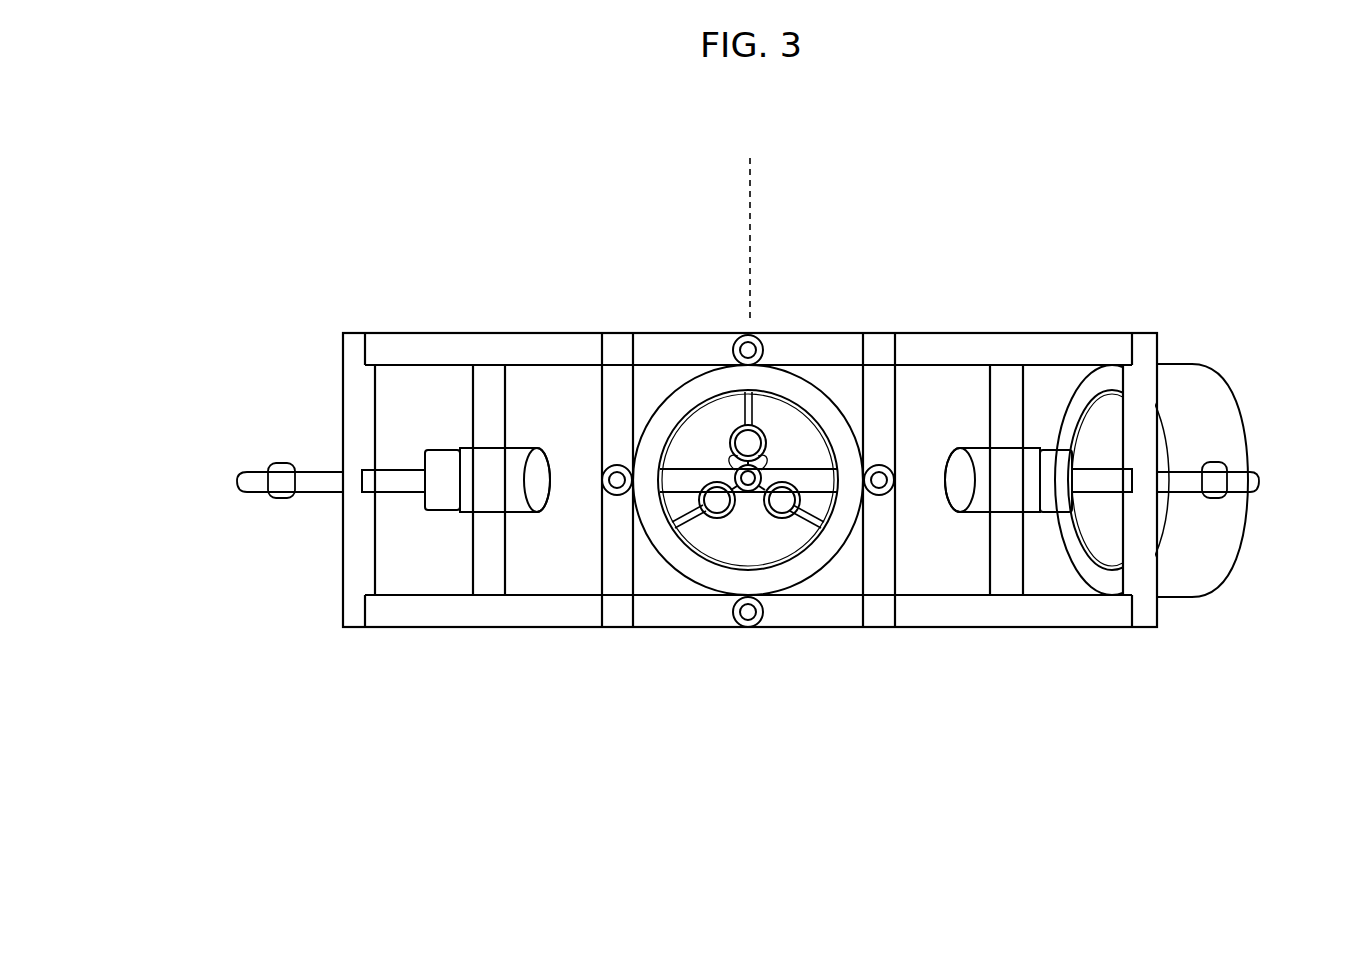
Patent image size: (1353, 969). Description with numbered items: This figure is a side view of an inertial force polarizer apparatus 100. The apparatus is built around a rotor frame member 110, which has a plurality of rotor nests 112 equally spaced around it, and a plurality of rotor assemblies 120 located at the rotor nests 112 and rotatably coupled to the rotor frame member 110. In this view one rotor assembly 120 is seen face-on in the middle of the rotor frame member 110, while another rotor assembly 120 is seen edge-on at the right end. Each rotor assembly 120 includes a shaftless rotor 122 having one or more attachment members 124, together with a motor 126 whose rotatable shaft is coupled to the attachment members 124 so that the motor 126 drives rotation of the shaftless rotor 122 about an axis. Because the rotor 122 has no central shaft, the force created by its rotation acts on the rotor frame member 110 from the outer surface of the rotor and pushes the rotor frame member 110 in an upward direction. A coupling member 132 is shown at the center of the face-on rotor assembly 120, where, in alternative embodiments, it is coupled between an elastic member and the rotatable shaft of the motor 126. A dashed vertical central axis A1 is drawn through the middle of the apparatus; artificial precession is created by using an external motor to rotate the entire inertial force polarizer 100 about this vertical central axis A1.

The inertial force polarizer apparatus 100 is at (243, 160).
The vertical central axis A1 is at (752, 183).
The rotor frame member 110 is at (503, 340).
The rotor nest 112 is at (738, 327).
The rotor assembly 120 is at (813, 590).
The shaftless rotor 122 is at (808, 382).
The attachment member 124 is at (737, 417).
The motor 126 is at (500, 507).
The coupling member 132 is at (763, 463).